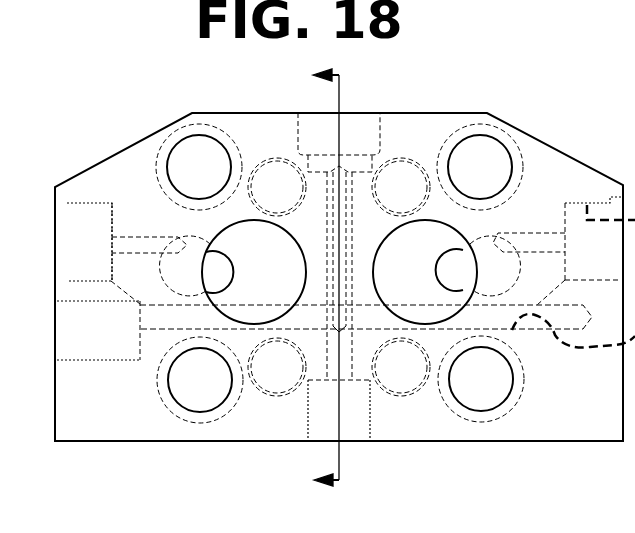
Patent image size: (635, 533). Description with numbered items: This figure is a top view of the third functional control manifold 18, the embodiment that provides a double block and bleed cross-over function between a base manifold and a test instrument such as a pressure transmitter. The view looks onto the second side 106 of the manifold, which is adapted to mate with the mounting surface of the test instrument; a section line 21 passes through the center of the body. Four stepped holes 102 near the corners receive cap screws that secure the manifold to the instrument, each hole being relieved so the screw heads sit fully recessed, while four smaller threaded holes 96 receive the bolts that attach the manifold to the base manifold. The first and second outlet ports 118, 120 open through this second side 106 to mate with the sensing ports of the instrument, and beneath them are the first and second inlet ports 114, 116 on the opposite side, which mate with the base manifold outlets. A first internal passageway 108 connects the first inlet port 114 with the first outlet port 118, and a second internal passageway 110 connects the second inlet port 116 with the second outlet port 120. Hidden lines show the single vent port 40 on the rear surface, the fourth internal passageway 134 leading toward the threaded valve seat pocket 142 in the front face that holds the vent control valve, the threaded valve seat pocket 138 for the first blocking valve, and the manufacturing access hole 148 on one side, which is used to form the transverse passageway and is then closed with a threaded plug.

The functional control manifold 18 is at (512, 71).
The section line 21 is at (312, 278).
The vent port 40 is at (373, 138).
The threads 96 is at (293, 163).
The stepped holes 102 is at (172, 180).
The second side 106 is at (566, 434).
The first internal passageway 108 is at (226, 276).
The second internal passageway 110 is at (455, 273).
The first inlet port 114 is at (172, 270).
The second inlet port 116 is at (507, 262).
The first outlet port 118 is at (296, 240).
The second outlet port 120 is at (373, 270).
The fourth internal passageway 134 is at (302, 393).
The threaded valve seat pocket 138 is at (87, 208).
The threaded valve seat pocket 142 is at (368, 408).
The manufacturing access hole 148 is at (85, 300).